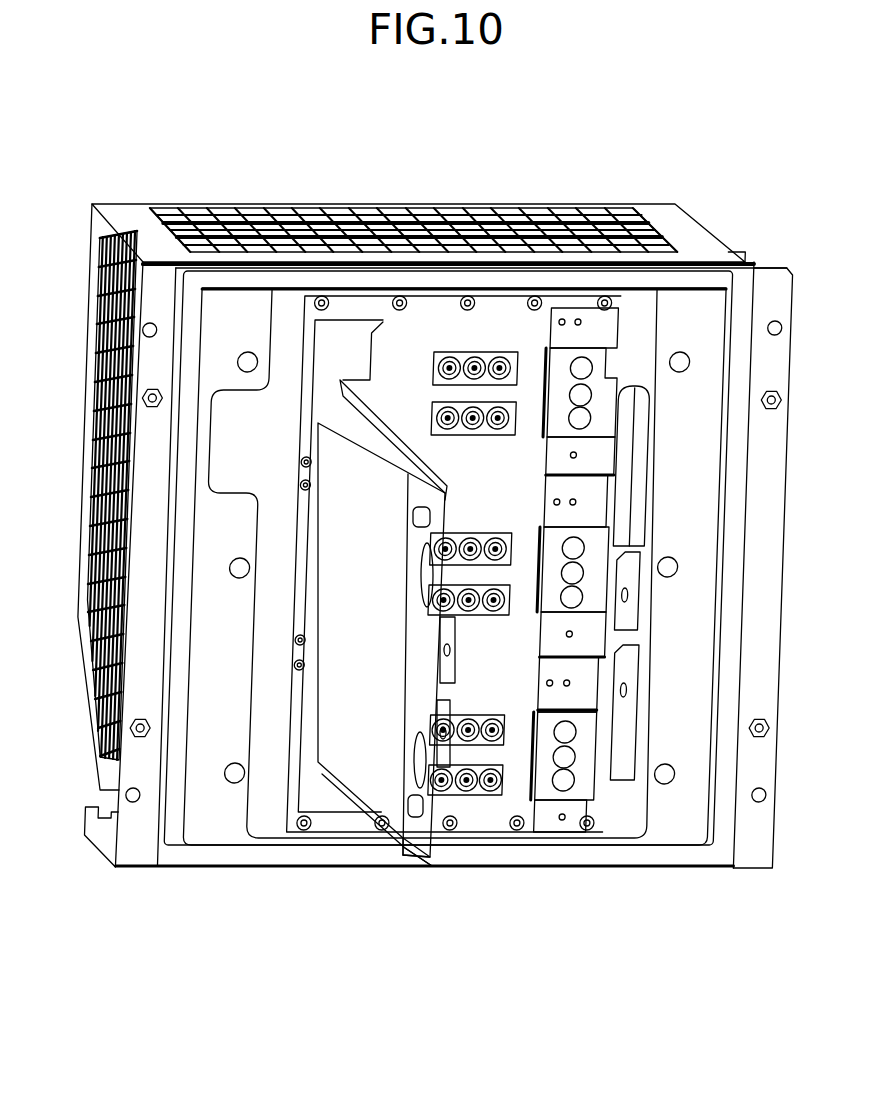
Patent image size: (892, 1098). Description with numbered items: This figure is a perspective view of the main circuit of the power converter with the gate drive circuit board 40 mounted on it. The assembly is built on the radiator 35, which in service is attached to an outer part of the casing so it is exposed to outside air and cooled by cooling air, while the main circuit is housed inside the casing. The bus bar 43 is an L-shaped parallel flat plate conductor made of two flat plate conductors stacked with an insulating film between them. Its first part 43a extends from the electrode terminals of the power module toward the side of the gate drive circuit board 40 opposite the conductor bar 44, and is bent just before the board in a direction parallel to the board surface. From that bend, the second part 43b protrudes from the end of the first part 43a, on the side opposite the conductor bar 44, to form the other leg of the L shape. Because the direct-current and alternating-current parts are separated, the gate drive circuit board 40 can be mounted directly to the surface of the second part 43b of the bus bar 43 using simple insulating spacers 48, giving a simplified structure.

The radiator 35 is at (170, 184).
The gate drive circuit board 40 is at (348, 725).
The bus bar 43 is at (320, 326).
The first part 43a is at (382, 333).
The second part 43b is at (432, 860).
The conductor bar 44 is at (560, 358).
The insulating spacer 48 is at (418, 510).